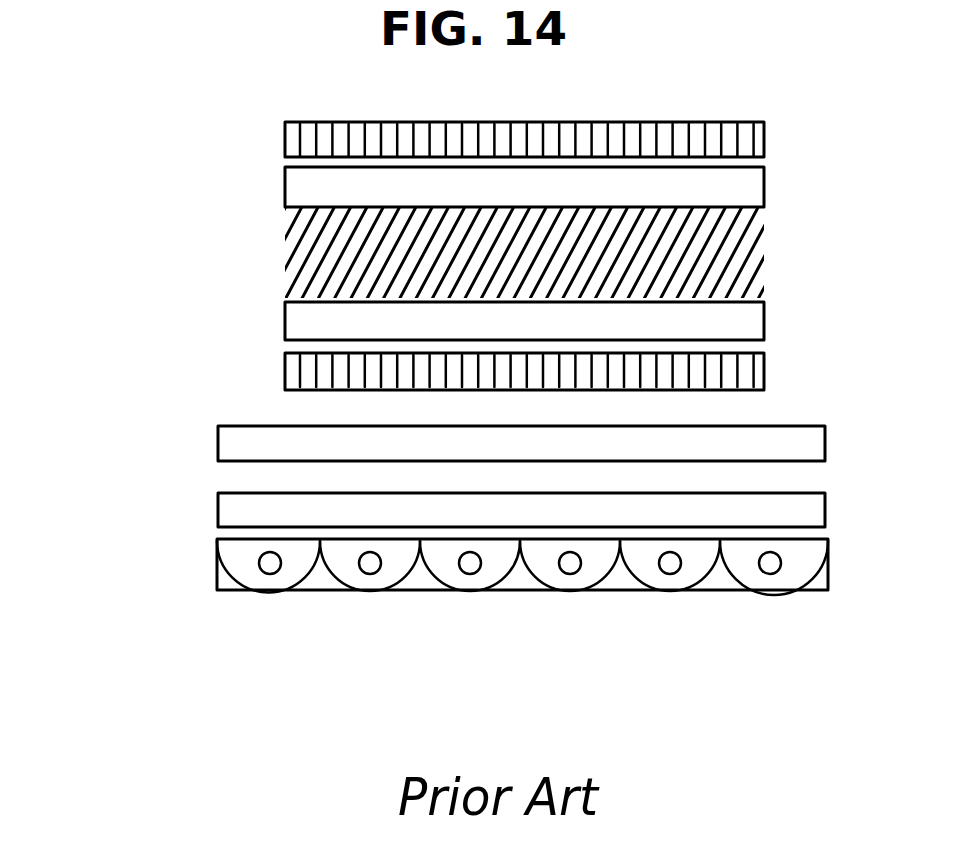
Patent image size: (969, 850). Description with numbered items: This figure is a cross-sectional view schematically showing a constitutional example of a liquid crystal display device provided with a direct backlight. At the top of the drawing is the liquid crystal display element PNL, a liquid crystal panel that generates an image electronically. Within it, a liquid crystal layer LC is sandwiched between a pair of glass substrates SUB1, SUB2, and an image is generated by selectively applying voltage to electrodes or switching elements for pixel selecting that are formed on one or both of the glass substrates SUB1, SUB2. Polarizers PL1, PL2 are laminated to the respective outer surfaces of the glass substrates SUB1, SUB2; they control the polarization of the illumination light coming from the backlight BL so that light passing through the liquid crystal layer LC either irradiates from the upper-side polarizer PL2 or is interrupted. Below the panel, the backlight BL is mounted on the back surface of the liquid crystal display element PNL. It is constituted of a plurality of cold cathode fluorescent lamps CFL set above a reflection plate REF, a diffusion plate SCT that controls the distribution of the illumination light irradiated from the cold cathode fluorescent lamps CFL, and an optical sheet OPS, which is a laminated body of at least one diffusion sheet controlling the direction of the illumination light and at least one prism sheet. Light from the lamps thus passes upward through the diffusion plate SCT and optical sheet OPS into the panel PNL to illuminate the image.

The liquid crystal display element PNL is at (127, 138).
The upper-side polarizer PL2 is at (284, 143).
The glass substrate SUB2 is at (284, 190).
The liquid crystal layer LC is at (284, 254).
The glass substrate SUB1 is at (284, 320).
The polarizer PL1 is at (284, 372).
The backlight BL is at (122, 425).
The optical sheet OPS is at (218, 443).
The diffusion plate SCT is at (218, 510).
The reflection plate REF is at (290, 590).
The cold cathode fluorescent lamps CFL is at (268, 574).